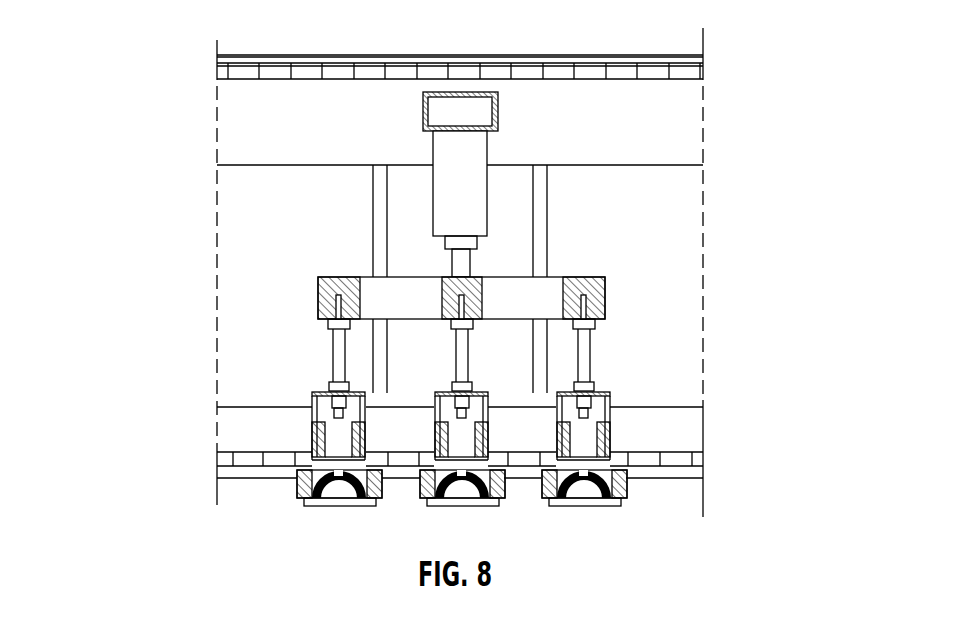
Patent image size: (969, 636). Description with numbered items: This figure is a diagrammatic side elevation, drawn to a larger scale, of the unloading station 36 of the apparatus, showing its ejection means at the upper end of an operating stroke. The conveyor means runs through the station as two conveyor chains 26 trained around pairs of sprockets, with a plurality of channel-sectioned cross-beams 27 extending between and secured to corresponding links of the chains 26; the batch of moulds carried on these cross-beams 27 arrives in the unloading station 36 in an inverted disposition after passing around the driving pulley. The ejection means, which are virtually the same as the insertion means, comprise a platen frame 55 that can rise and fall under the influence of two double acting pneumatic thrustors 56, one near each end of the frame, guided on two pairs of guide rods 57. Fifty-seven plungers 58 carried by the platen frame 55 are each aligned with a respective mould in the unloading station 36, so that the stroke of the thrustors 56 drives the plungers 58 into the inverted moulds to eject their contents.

The conveyor chains 26 is at (271, 72).
The channel-sectioned cross-beams 27 is at (630, 492).
The unloading station 36 is at (660, 298).
The platen frame 55 is at (603, 283).
The double acting pneumatic thrustors 56 is at (437, 155).
The guide rods 57 is at (375, 218).
The plungers 58 is at (635, 366).